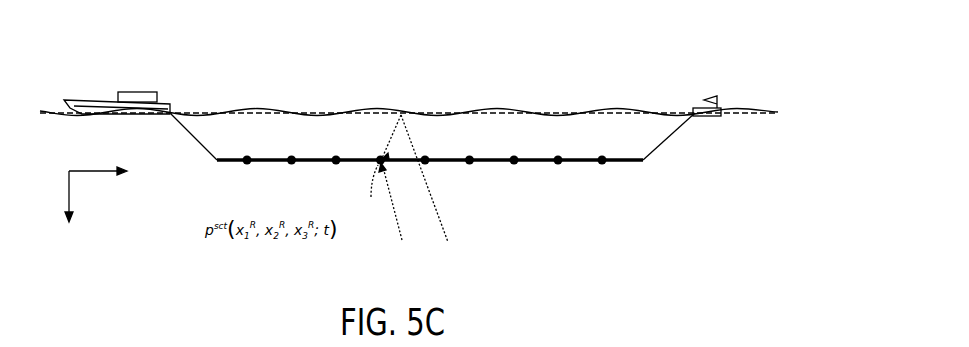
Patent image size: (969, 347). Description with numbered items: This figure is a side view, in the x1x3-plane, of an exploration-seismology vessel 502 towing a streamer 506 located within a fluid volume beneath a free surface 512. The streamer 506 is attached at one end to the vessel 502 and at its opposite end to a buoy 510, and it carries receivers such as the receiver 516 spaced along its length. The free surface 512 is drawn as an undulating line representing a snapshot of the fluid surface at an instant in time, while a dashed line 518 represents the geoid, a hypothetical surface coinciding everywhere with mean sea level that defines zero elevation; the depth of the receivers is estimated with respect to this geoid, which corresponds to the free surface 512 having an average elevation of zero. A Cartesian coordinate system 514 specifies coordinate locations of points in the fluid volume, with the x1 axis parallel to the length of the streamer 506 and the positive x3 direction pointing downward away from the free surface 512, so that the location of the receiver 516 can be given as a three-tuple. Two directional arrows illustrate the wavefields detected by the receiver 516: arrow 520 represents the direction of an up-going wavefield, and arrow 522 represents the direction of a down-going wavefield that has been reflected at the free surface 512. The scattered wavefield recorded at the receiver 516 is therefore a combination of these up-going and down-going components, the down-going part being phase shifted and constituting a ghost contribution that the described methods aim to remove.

The exploration-seismology vessel 502 is at (98, 103).
The streamer 506 is at (631, 163).
The buoy 510 is at (727, 106).
The free surface 512 is at (637, 110).
The Cartesian coordinate system 514 is at (83, 194).
The receiver 516 is at (378, 163).
The geoid 518 is at (767, 116).
The directional arrow (up-going wavefield) 520 is at (393, 225).
The directional arrow (down-going wavefield) 522 is at (442, 220).